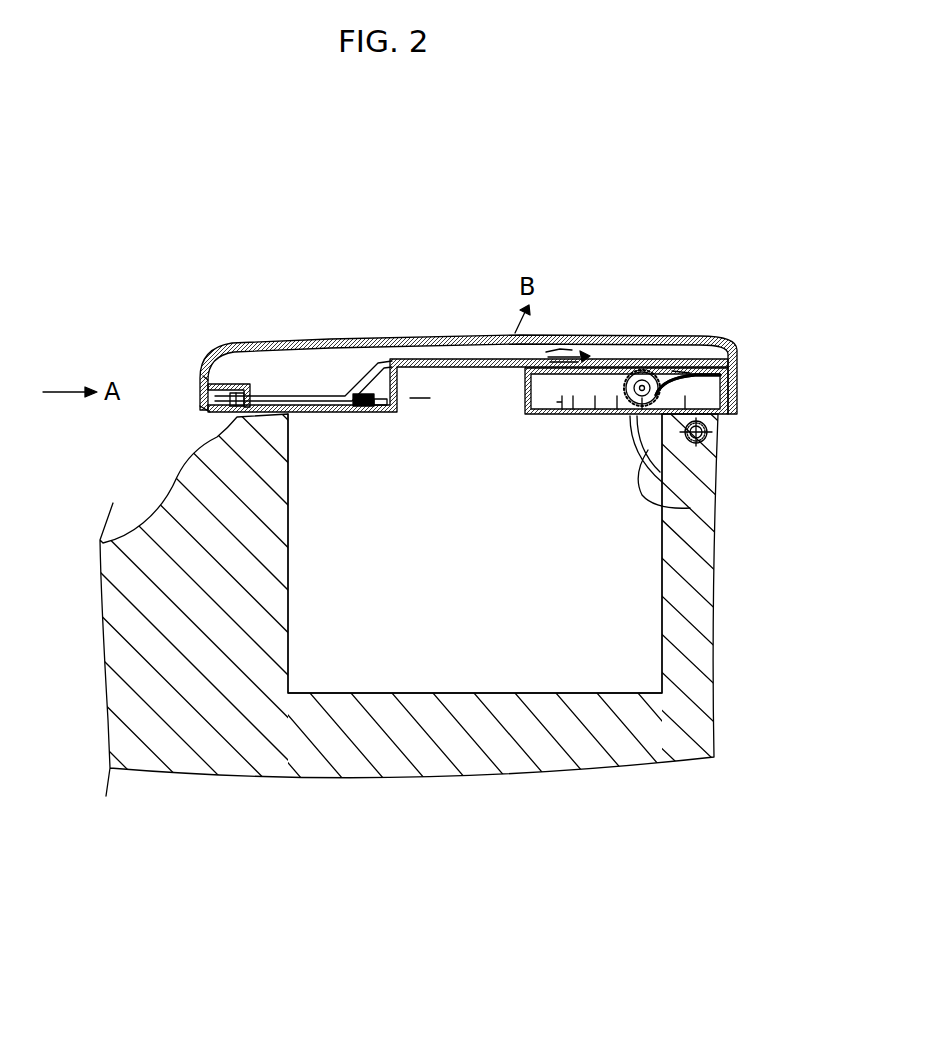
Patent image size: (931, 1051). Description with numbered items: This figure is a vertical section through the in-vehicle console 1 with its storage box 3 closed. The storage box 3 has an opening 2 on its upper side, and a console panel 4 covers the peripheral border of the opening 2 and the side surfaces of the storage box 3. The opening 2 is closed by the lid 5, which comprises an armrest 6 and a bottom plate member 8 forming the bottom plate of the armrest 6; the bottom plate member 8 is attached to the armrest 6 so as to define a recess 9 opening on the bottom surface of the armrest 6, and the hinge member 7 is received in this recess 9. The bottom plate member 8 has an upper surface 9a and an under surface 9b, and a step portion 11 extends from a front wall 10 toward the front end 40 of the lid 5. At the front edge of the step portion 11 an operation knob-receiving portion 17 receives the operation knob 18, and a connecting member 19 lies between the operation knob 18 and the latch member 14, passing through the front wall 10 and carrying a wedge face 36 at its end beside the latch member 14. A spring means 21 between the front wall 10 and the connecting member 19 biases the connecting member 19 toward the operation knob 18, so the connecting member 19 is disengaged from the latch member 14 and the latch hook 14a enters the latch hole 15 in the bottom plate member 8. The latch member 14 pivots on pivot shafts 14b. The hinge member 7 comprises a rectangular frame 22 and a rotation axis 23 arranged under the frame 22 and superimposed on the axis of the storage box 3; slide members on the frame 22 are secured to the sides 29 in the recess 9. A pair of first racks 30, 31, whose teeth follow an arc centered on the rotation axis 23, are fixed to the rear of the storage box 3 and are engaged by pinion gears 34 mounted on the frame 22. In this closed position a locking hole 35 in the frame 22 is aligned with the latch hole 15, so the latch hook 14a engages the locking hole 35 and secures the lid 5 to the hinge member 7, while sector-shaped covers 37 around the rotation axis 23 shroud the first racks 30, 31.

The console 1 is at (149, 364).
The opening 2 is at (487, 413).
The storage box 3 is at (580, 621).
The console panel 4 is at (138, 630).
The lid 5 is at (302, 341).
The armrest 6 is at (438, 376).
The hinge member 7 is at (580, 417).
The bottom plate member 8 is at (382, 415).
The recess 9 is at (472, 403).
The upper surface 9a is at (617, 357).
The under surface 9b is at (432, 418).
The front wall 10 is at (420, 418).
The step portion 11 is at (302, 418).
The latch member 14 is at (562, 365).
The latch hook 14a is at (538, 417).
The pivot shaft 14b is at (586, 358).
The latch hole 15 is at (513, 418).
The operation knob-receiving portion 17 is at (230, 390).
The operation knob 18 is at (210, 397).
The connecting member 19 is at (325, 397).
The spring means 21 is at (353, 415).
The frame 22 is at (650, 370).
The rotation axis 23 is at (712, 432).
The side 29 is at (420, 397).
The first rack 30 is at (726, 347).
The first rack 31 is at (688, 385).
The pinion gear 34 is at (672, 370).
The locking hole 35 is at (565, 417).
The wedge face 36 is at (547, 352).
The sector-shaped cover 37 is at (670, 510).
The front end 40 is at (203, 362).